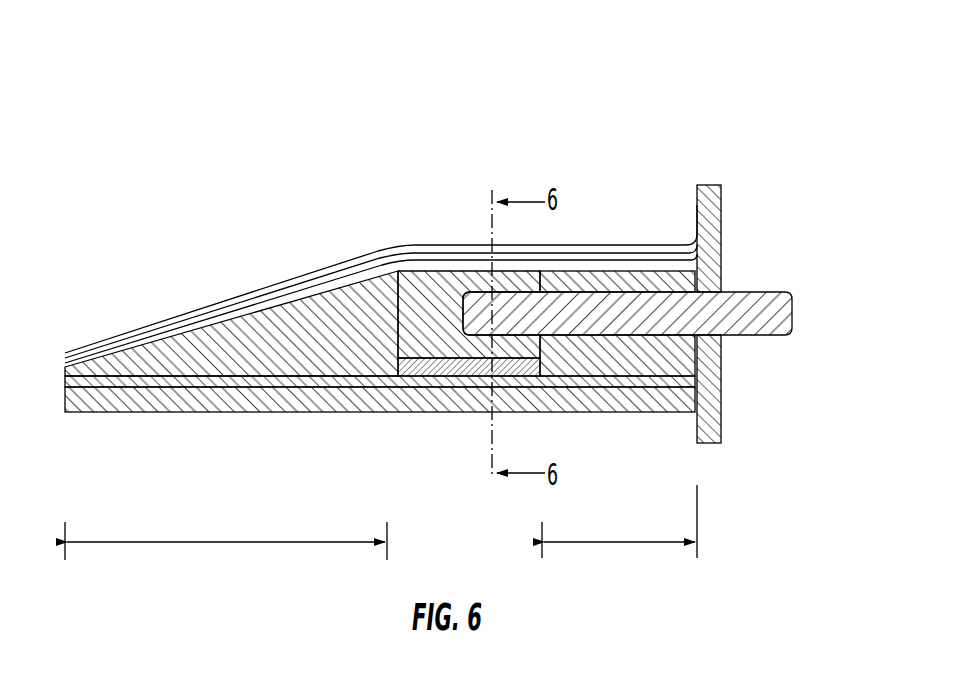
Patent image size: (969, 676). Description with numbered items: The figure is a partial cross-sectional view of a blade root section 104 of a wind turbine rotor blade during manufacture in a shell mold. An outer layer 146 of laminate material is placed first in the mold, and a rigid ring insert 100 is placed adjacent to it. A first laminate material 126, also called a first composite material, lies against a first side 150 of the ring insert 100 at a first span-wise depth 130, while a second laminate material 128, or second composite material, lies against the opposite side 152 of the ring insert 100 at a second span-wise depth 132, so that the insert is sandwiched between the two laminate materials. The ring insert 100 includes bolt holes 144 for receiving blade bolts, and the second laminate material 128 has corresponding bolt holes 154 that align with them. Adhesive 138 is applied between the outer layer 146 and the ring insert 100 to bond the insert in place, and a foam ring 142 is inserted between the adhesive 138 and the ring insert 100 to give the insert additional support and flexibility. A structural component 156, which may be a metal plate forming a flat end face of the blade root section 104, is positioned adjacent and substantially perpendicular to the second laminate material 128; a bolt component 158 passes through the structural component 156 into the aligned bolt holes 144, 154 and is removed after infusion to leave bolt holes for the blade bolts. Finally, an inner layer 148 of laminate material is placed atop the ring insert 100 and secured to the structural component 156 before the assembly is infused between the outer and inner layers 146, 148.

The blade root section 104 is at (671, 98).
The ring insert 100 is at (437, 289).
The first laminate material 126 is at (200, 345).
The second laminate material 128 is at (683, 357).
The first span-wise depth 130 is at (183, 543).
The second span-wise depth 132 is at (605, 543).
The adhesive 138 is at (615, 386).
The foam ring 142 is at (430, 377).
The bolt holes 144 is at (475, 292).
The outer layer of laminate material 146 is at (85, 413).
The inner layer of laminate material 148 is at (155, 323).
The first side of the ring insert 150 is at (398, 293).
The opposite side of the ring insert 152 is at (528, 374).
The bolt holes of the second composite material 154 is at (665, 290).
The structural component 156 is at (721, 404).
The bolt component 158 is at (747, 307).